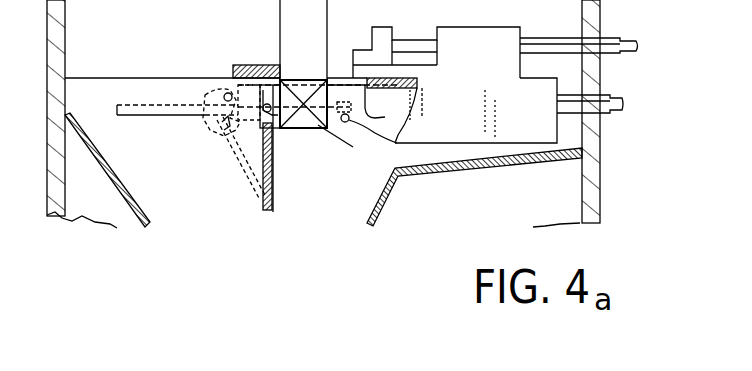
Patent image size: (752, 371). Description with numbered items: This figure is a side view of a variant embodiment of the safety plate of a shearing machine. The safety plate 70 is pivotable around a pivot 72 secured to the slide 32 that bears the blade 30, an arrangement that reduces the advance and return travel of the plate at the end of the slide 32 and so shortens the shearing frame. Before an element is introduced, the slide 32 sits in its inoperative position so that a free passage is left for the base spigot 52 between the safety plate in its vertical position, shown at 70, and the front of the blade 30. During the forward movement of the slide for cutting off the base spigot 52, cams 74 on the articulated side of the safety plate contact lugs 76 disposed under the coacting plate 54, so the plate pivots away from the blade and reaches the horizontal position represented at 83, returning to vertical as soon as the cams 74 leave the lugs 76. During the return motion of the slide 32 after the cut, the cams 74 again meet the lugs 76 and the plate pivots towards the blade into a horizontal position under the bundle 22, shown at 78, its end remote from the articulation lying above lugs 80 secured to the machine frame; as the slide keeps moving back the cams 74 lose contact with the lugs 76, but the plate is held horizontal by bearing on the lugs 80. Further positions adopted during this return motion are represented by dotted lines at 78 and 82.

The bundle 22 is at (314, 43).
The blade 30 is at (420, 83).
The slide 32 is at (515, 130).
The base spigot 52 is at (322, 130).
The coacting plate 54 is at (250, 64).
The safety plate 70 is at (268, 212).
The pivot 72 is at (268, 130).
The cams 74 is at (222, 122).
The lugs 76 is at (225, 92).
The horizontal position of safety plate under bundle 78 is at (338, 107).
The lugs 80 is at (391, 110).
The position of safety plate during return motion 82 is at (247, 168).
The horizontal position of safety plate 83 is at (137, 112).